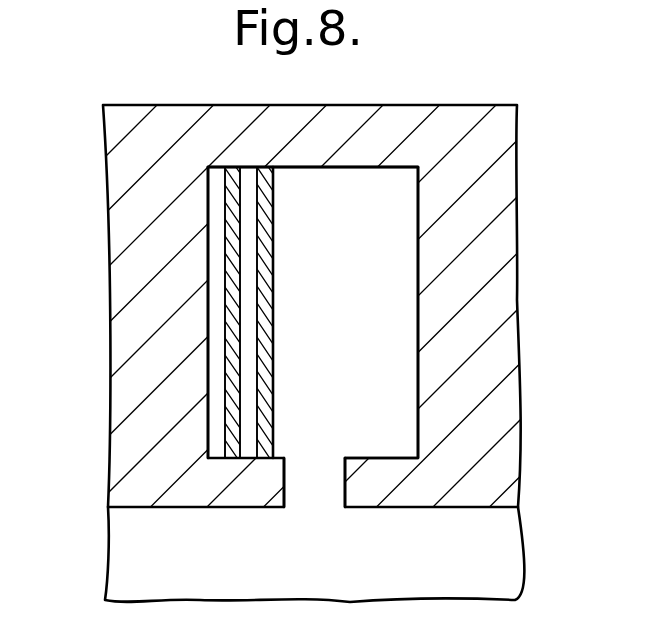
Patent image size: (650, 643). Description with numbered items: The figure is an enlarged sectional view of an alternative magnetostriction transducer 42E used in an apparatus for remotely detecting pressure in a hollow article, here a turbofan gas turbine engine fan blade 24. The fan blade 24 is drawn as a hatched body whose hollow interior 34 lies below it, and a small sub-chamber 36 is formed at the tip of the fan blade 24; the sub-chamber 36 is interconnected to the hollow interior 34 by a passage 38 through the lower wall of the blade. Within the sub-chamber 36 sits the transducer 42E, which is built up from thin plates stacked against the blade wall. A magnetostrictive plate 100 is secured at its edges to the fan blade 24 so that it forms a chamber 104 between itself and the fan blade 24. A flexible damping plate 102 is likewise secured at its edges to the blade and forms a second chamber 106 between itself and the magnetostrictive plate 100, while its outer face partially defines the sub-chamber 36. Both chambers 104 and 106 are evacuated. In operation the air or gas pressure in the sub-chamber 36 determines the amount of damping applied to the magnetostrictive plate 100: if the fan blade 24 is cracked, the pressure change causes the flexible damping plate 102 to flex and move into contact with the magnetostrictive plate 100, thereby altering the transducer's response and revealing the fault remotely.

The fan blade 24 is at (490, 297).
The hollow interior 34 is at (476, 547).
The sub-chamber 36 is at (385, 392).
The passage 38 is at (308, 497).
The magnetostriction transducer 42E is at (328, 185).
The magnetostrictive plate 100 is at (228, 220).
The flexible damping plate 102 is at (275, 225).
The chamber 104 is at (213, 281).
The chamber 106 is at (254, 295).